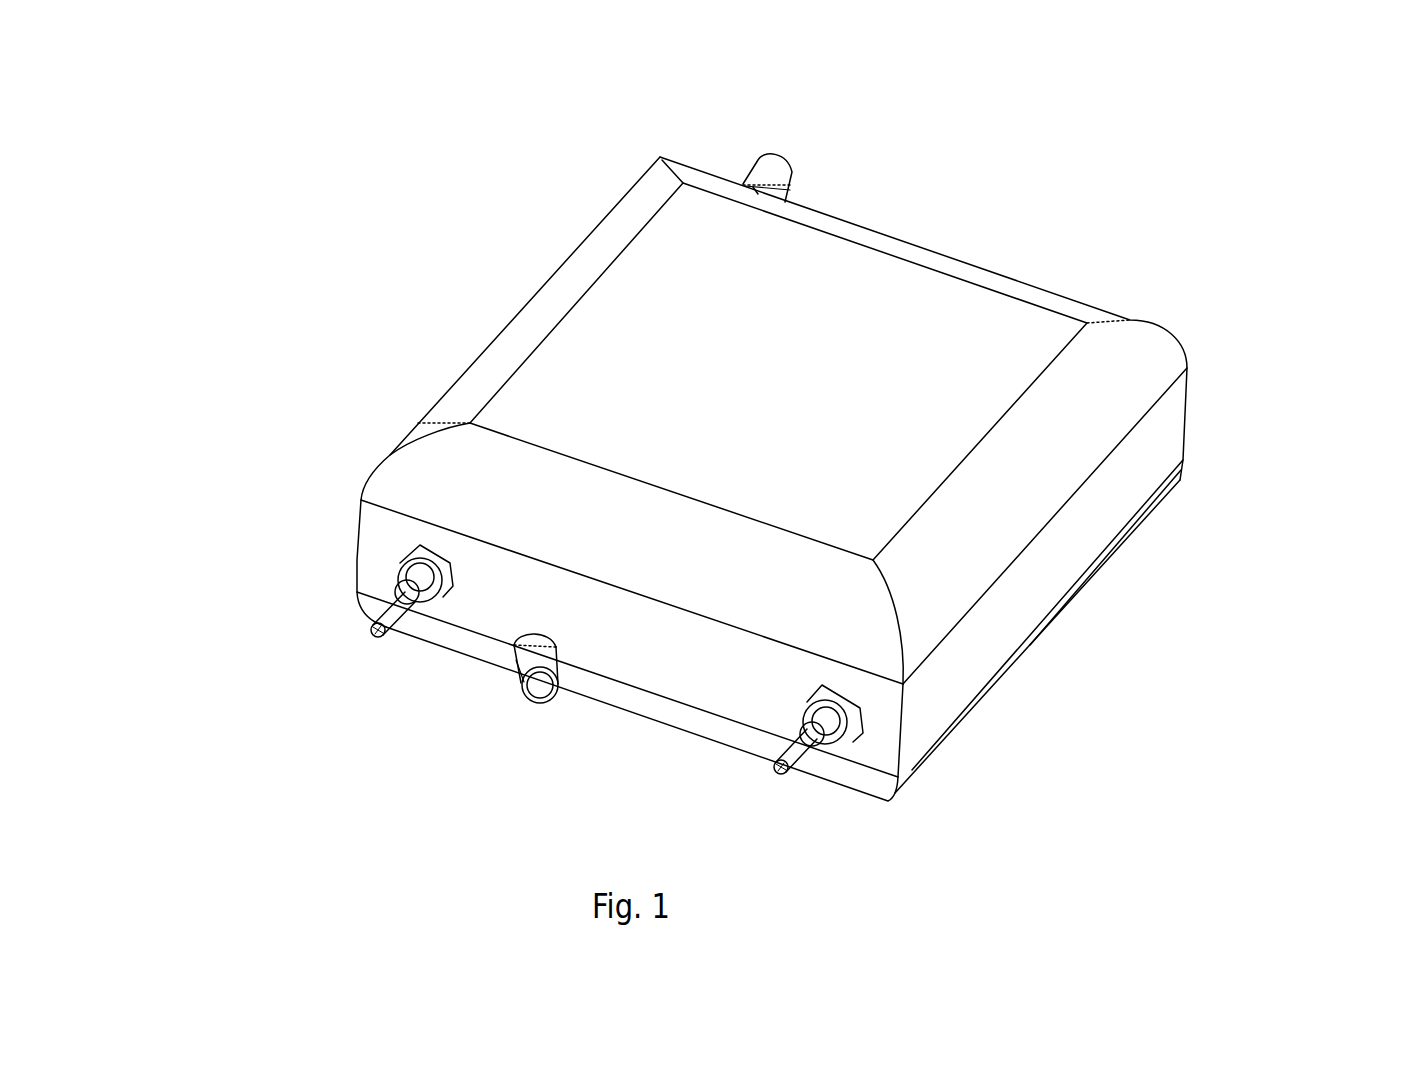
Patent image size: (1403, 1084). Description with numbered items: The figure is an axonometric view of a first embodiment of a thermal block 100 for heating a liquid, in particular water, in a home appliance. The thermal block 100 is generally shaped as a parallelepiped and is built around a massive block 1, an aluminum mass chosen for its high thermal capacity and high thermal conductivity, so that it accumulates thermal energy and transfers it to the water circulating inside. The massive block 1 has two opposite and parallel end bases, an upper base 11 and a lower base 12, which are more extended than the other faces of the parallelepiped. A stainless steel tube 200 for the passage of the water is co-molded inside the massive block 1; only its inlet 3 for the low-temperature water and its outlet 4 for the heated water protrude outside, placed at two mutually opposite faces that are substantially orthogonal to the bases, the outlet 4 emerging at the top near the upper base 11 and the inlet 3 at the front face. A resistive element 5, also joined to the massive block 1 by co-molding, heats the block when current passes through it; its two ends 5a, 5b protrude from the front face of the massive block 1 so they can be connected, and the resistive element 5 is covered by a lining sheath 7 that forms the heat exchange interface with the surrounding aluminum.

The thermal block 100 is at (325, 735).
The massive block 1 is at (1090, 300).
The upper base 11 is at (962, 388).
The lower base 12 is at (1030, 645).
The outlet 4 is at (768, 167).
The tube 200 is at (787, 185).
The lining sheath 7 is at (418, 576).
The end of resistive element 5a is at (387, 618).
The inlet 3 is at (540, 687).
The resistive element 5 is at (815, 743).
The end of resistive element 5b is at (797, 757).